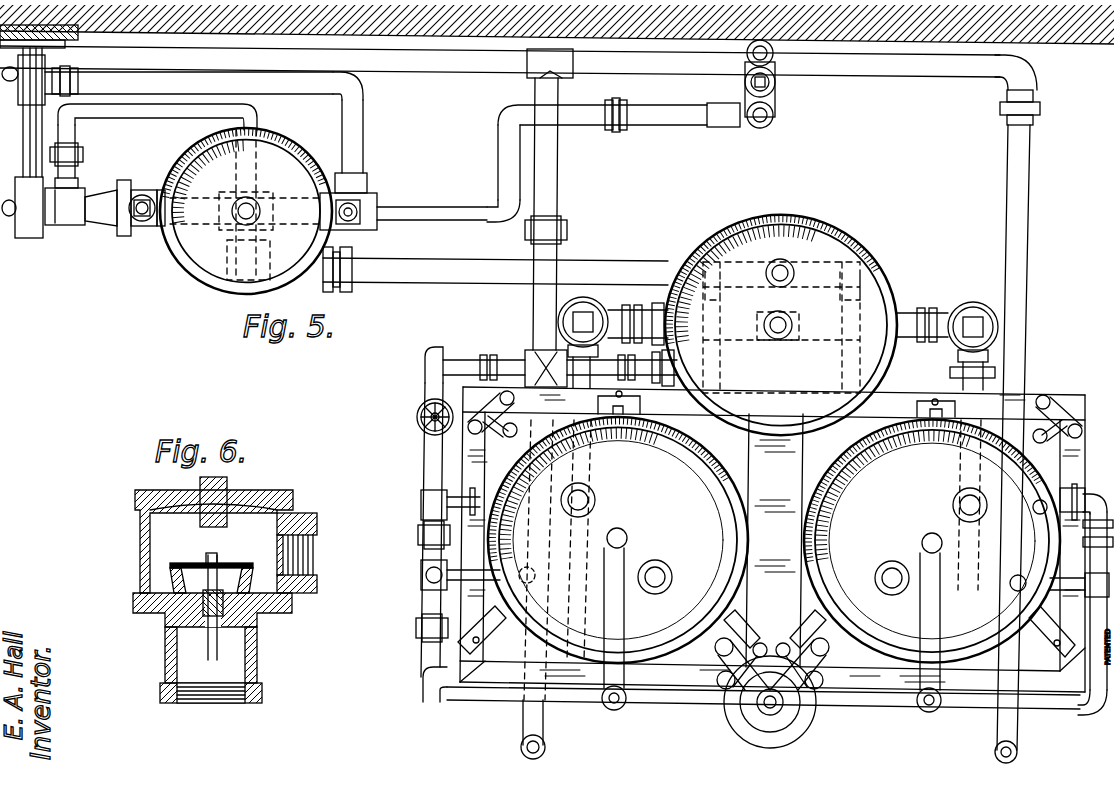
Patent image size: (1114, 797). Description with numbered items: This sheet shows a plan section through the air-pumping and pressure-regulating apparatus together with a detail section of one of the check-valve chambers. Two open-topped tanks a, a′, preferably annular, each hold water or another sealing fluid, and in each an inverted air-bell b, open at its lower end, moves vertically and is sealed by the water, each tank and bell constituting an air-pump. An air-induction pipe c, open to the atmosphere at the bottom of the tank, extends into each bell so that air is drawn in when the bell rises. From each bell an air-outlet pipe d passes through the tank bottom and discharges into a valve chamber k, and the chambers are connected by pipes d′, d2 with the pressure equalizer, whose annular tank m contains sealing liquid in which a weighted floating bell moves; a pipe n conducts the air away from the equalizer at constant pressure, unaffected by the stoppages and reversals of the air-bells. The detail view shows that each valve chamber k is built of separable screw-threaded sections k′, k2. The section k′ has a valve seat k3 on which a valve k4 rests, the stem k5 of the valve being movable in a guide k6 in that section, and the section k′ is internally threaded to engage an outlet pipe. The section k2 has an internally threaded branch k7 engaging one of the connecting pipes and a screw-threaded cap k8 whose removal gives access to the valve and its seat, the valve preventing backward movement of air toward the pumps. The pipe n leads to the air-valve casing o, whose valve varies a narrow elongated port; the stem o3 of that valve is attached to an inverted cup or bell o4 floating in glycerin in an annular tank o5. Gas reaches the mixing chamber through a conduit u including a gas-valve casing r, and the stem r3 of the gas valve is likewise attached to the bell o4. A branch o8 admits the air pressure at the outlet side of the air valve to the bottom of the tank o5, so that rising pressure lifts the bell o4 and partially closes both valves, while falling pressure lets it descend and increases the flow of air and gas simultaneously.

In FIG. 5, the air-valve casing o is at (156, 227).
In FIG. 5, the stem of the air valve o3 is at (130, 220).
In FIG. 5, the inverted cup or bell o4 is at (302, 173).
In FIG. 5, the annular tank o5 is at (222, 294).
In FIG. 5, the branch o8 is at (140, 110).
In FIG. 5, the gas conduit u is at (294, 86).
In FIG. 5, the gas-valve casing r is at (370, 228).
In FIG. 5, the stem of the gas-valve r3 is at (360, 210).
In FIG. 5, the pipe n is at (621, 264).
In FIG. 5, the tank m is at (857, 248).
In FIG. 5, the valve chamber k is at (558, 333).
In FIG. 6, the valve chamber k is at (140, 552).
In FIG. 5, the air-outlet pipe d is at (580, 408).
In FIG. 5, the pipe d′ is at (672, 292).
In FIG. 5, the pipe d2 is at (786, 316).
In FIG. 5, the tank a is at (595, 497).
In FIG. 5, the tank a′ is at (1020, 630).
In FIG. 5, the inverted air-pumping tank or air-bell b is at (510, 542).
In FIG. 5, the air-induction pipe c is at (667, 569).
In FIG. 6, the section of valve chamber k′ is at (165, 660).
In FIG. 6, the section of valve chamber k2 is at (137, 596).
In FIG. 6, the valve seat k3 is at (170, 578).
In FIG. 6, the valve k4 is at (235, 566).
In FIG. 6, the valve stem k5 is at (216, 636).
In FIG. 6, the guide k6 is at (196, 632).
In FIG. 6, the branch k7 is at (318, 546).
In FIG. 6, the screw-threaded cap k8 is at (262, 492).